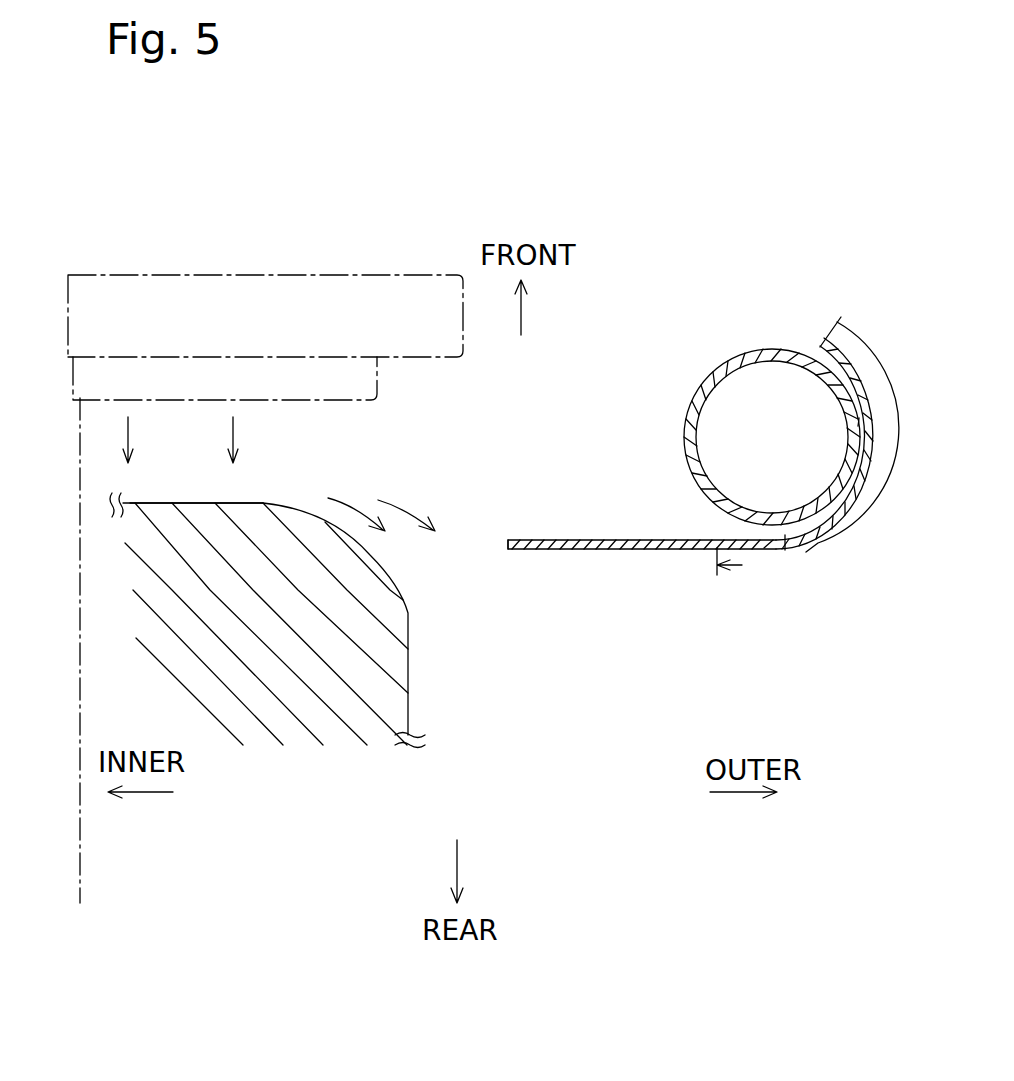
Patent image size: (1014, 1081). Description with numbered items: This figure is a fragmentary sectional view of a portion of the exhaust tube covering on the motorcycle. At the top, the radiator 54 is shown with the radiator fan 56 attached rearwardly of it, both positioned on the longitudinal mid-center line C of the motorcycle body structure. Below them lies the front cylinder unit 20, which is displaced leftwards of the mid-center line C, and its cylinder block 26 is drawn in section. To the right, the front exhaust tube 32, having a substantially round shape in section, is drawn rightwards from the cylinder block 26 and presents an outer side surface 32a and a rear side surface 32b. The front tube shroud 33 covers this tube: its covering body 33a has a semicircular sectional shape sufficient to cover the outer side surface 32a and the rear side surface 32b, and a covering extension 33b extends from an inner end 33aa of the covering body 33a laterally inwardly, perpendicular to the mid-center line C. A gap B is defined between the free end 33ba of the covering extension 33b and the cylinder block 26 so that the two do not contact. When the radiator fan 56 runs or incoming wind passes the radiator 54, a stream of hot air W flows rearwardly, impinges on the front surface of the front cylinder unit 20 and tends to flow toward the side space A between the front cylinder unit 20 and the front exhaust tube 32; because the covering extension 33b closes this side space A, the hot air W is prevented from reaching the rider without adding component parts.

The front cylinder unit 20 is at (205, 490).
The cylinder block 26 is at (283, 503).
The radiator 54 is at (250, 275).
The radiator fan 56 is at (310, 400).
The front exhaust tube 32 is at (693, 380).
The outer side surface of the front exhaust tube 32a is at (858, 422).
The rear side surface of the front exhaust tube 32b is at (790, 549).
The front tube shroud 33 is at (851, 333).
The covering body 33a is at (878, 505).
The inner end of the covering body 33aa is at (753, 550).
The covering extension 33b is at (617, 550).
The free end of the covering extension 33ba is at (508, 545).
The hot air W is at (130, 435).
The gap B is at (453, 560).
The longitudinal mid-center line C is at (77, 423).
The side space A is at (532, 580).